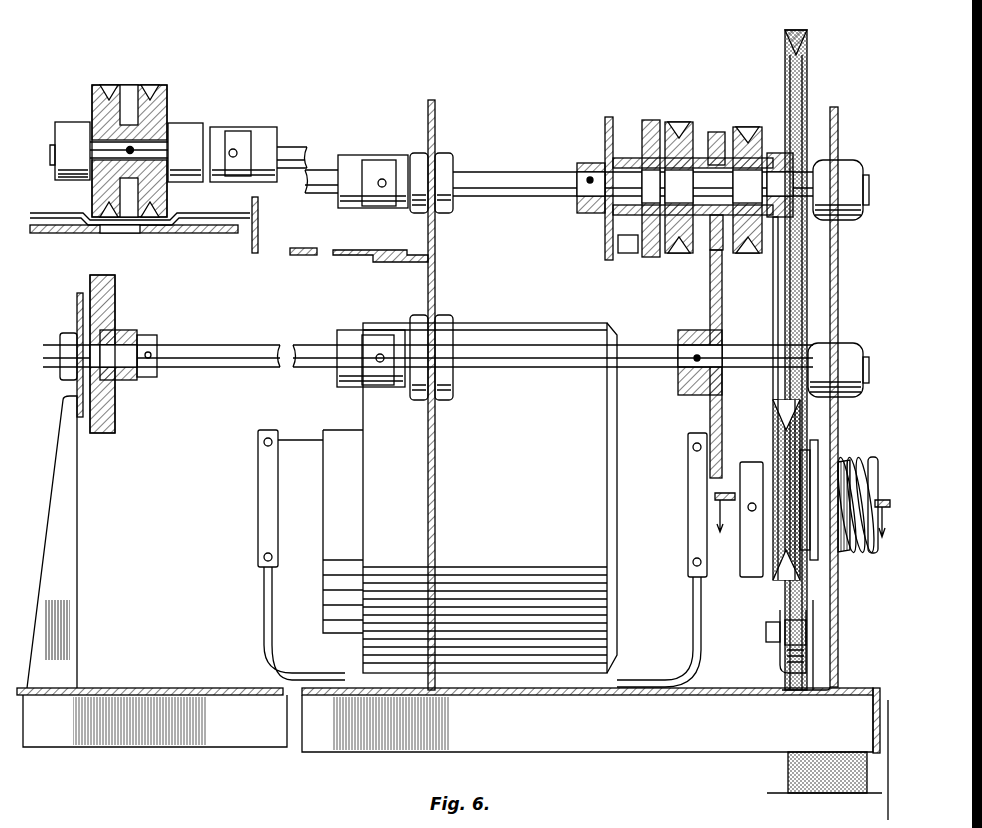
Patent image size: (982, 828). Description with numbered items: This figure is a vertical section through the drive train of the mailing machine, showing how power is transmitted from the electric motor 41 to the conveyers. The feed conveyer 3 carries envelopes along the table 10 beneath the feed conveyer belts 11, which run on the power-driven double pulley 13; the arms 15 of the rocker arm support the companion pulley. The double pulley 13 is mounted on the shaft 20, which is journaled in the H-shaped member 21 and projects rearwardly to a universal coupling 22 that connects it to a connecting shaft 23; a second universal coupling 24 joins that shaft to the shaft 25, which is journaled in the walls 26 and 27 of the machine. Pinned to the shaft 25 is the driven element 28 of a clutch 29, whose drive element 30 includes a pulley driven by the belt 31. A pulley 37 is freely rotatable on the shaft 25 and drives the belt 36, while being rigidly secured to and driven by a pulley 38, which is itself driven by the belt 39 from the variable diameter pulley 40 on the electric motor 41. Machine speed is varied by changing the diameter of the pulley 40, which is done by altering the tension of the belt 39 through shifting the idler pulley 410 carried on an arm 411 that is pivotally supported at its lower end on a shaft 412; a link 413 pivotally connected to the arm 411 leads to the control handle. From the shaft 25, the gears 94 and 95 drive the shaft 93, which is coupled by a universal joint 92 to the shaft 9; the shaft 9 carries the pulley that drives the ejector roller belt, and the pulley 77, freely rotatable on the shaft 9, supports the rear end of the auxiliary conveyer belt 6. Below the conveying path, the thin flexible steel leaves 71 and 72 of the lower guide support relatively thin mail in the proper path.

The feed conveyer 3 is at (174, 84).
The auxiliary conveyer 6 is at (100, 435).
The shaft 9 is at (208, 350).
The table 10 is at (238, 232).
The feed conveyer belts 11 is at (134, 88).
The double pulley 13 is at (96, 108).
The arms 15 is at (252, 213).
The shaft 20 is at (96, 150).
The H-shaped member 21 is at (189, 125).
The universal coupling 22 is at (254, 118).
The connecting shaft 23 is at (297, 148).
The second universal coupling 24 is at (397, 148).
The shaft 25 is at (493, 178).
The wall 26 is at (436, 112).
The wall 27 is at (836, 108).
The driven element 28 is at (586, 163).
The clutch 29 is at (624, 118).
The drive element 30 is at (655, 140).
The belt 31 is at (681, 124).
The belt 36 is at (745, 130).
The pulley 37 is at (767, 150).
The pulley 38 is at (800, 70).
The belt 39 is at (798, 32).
The variable diameter pulley 40 is at (757, 559).
The electric motor 41 is at (643, 618).
The steel leaf 71 is at (108, 225).
The steel leaf 72 is at (175, 232).
The pulley 77 is at (116, 308).
The universal joint 92 is at (382, 331).
The shaft 93 is at (646, 365).
The gear 94 is at (722, 316).
The gear 95 is at (708, 245).
The idler pulley 410 is at (775, 427).
The arm 411 is at (838, 470).
The shaft 412 is at (808, 628).
The link 413 is at (787, 560).